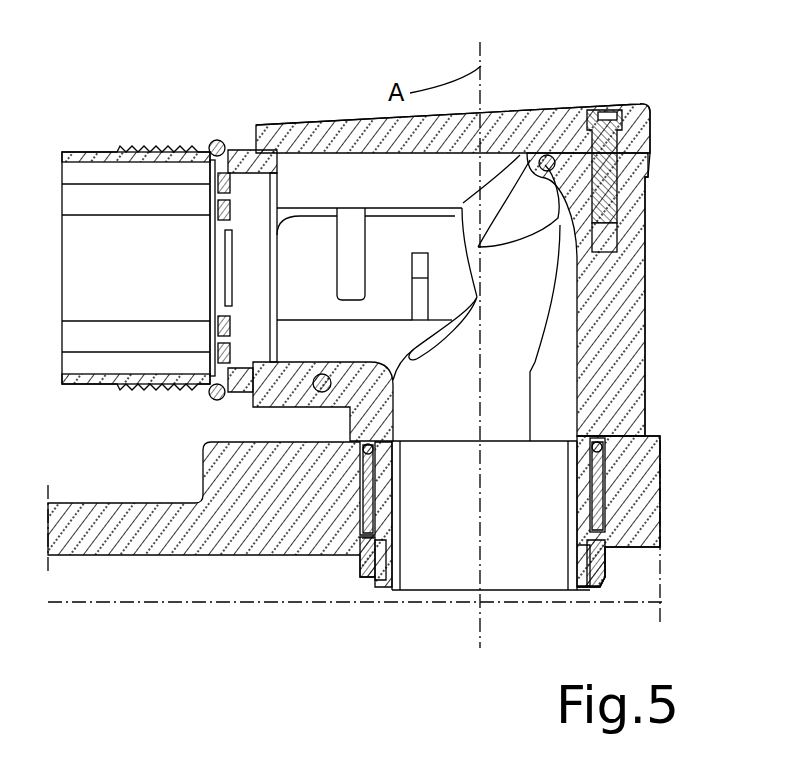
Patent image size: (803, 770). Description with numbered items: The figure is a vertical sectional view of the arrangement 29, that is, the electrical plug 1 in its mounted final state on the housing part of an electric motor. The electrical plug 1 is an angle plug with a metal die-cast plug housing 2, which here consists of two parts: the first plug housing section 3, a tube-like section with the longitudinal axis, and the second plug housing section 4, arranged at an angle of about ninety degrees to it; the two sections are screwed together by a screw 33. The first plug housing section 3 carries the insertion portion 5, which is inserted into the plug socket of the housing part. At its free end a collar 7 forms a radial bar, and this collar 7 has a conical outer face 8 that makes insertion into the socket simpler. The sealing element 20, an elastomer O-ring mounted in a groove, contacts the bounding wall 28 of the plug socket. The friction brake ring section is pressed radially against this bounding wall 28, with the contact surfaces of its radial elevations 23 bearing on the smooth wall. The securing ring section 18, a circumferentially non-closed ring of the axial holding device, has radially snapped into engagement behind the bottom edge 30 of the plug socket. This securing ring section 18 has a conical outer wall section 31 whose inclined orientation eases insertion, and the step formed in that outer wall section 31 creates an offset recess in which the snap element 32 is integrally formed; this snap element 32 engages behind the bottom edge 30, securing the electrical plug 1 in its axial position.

The electrical plug 1 is at (356, 114).
The plug housing 2 is at (653, 135).
The first plug housing section 3 is at (653, 247).
The second plug housing section 4 is at (275, 120).
The insertion portion 5 is at (597, 426).
The collar 7 is at (585, 590).
The conical outer face 8 is at (371, 592).
The securing ring section 18 is at (365, 557).
The sealing element 20 is at (610, 438).
The radial elevations 23 is at (362, 490).
The bounding wall 28 is at (610, 470).
The arrangement 29 is at (152, 127).
The bottom edge 30 is at (365, 553).
The conical outer wall section 31 is at (607, 562).
The snap element 32 is at (365, 552).
The screw 33 is at (605, 110).